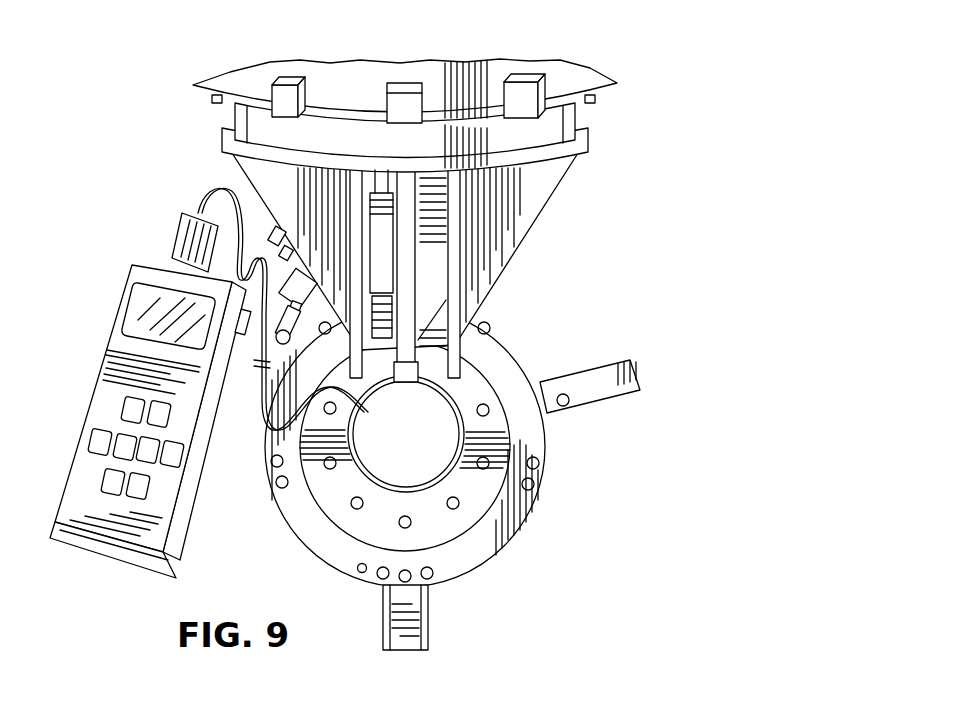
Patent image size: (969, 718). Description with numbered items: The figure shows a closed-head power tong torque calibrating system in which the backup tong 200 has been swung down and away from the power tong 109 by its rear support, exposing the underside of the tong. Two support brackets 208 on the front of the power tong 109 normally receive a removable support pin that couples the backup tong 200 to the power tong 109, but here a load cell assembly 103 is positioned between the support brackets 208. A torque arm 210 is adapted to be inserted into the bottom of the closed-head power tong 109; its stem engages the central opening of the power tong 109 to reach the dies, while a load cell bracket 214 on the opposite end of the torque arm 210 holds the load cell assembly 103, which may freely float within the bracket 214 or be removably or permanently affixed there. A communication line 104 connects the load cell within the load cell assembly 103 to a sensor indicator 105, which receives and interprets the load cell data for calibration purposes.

The load cell assembly 103 is at (362, 247).
The communication line 104 is at (262, 405).
The sensor indicator 105 is at (92, 415).
The closed-head power tong 109 is at (533, 57).
The backup tong 200 is at (478, 557).
The support brackets 208 is at (262, 180).
The torque arm 210 is at (403, 358).
The load cell bracket 214 is at (388, 249).